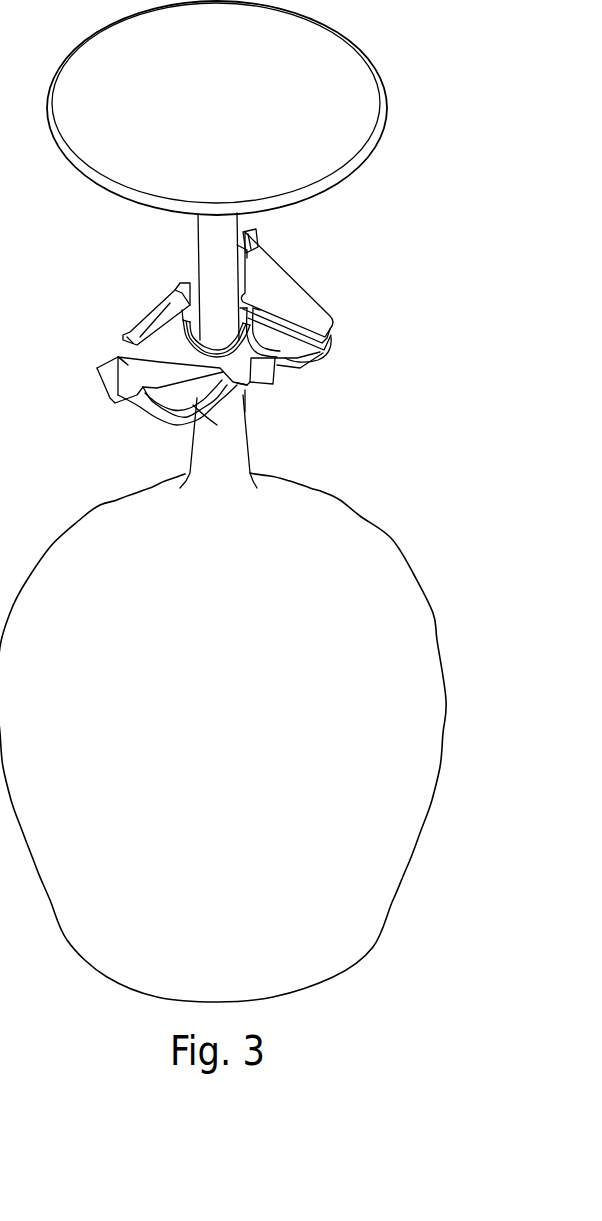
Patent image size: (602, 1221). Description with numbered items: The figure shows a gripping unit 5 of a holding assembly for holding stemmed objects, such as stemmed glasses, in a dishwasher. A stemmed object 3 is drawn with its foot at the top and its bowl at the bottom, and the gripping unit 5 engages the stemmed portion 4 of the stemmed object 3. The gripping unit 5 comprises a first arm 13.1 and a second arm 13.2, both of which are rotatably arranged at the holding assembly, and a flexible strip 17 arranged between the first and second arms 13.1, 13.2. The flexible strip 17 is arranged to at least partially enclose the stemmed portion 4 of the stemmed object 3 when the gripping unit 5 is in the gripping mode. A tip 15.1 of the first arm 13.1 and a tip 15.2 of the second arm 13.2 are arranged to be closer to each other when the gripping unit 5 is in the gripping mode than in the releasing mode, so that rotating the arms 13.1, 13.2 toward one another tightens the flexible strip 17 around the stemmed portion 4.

The stemmed object 3 is at (237, 780).
The stemmed portion 4 is at (228, 433).
The gripping unit 5 is at (323, 267).
The first arm 13.1 is at (220, 424).
The second arm 13.2 is at (300, 362).
The tip of the first arm 15.1 is at (257, 392).
The tip of the second arm 15.2 is at (272, 378).
The flexible strip 17 is at (200, 326).